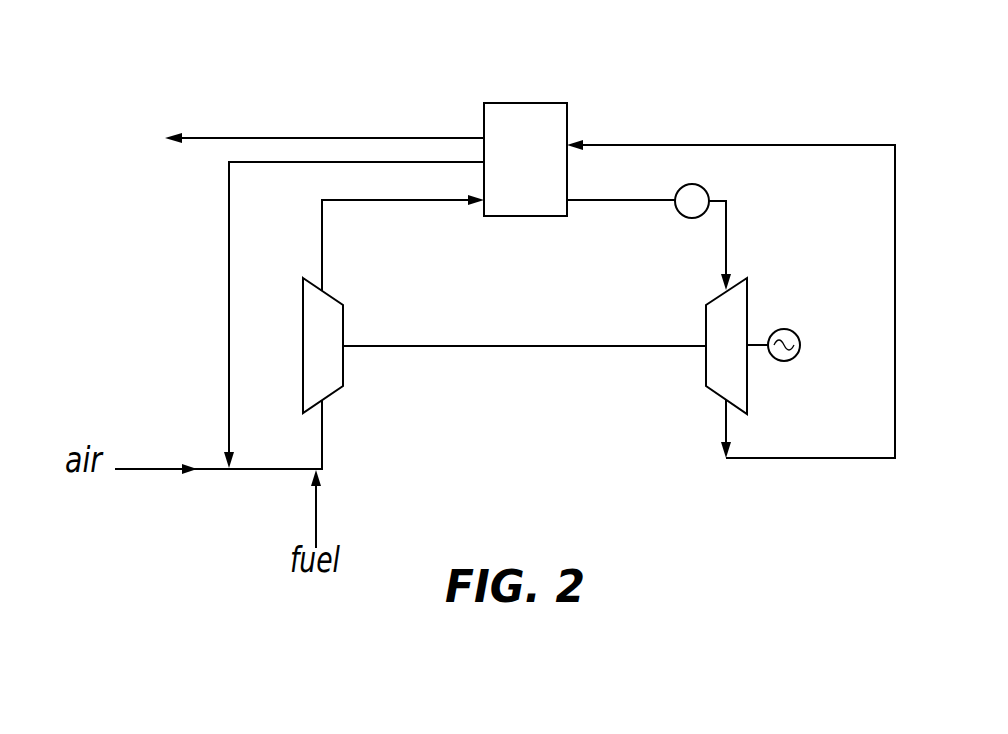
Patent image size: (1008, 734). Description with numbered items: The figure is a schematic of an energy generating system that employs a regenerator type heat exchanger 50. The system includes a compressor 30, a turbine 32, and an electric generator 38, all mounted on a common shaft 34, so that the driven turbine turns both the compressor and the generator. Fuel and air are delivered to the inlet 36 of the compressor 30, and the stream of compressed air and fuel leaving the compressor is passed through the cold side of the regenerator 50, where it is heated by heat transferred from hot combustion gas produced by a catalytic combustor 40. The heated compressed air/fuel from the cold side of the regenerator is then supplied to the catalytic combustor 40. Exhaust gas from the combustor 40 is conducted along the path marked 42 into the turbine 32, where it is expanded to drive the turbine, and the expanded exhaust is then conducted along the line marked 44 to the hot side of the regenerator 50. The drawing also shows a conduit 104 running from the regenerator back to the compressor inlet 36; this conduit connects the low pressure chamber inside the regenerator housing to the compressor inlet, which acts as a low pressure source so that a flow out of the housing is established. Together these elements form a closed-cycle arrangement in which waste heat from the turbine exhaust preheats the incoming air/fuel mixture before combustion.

The compressor 30 is at (344, 372).
The turbine 32 is at (713, 393).
The common shaft 34 is at (560, 352).
The inlet of the compressor 36 is at (307, 438).
The electric generator 38 is at (784, 362).
The catalytic combustor 40 is at (688, 218).
The turbine inlet 42 is at (743, 264).
The exhaust recirculation line 44 is at (695, 145).
The regenerator type heat exchanger 50 is at (520, 103).
The conduit 104 is at (229, 323).